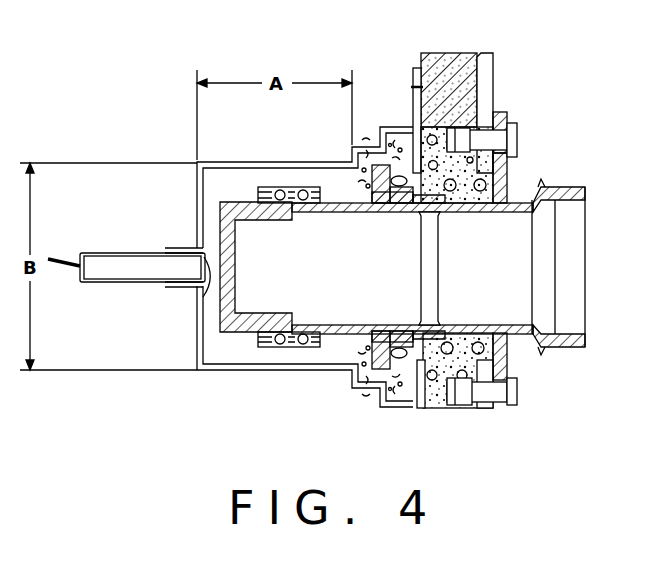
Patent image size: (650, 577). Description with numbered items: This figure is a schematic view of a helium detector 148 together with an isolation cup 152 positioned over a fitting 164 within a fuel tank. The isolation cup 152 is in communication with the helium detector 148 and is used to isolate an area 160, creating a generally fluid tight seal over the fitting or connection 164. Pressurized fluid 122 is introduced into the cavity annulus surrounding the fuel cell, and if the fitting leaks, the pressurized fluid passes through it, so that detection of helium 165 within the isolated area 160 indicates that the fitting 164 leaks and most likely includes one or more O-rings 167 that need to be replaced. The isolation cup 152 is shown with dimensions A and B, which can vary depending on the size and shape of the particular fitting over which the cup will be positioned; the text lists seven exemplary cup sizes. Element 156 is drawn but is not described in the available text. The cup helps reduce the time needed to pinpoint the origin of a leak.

The pressurized fluid 122 is at (503, 183).
The helium detector 148 is at (130, 283).
The isolation cup 152 is at (277, 162).
The latch 156 is at (203, 297).
The isolated area 160 is at (316, 352).
The fitting 164 is at (243, 333).
The helium 165 is at (386, 134).
The O-rings 167 is at (428, 392).